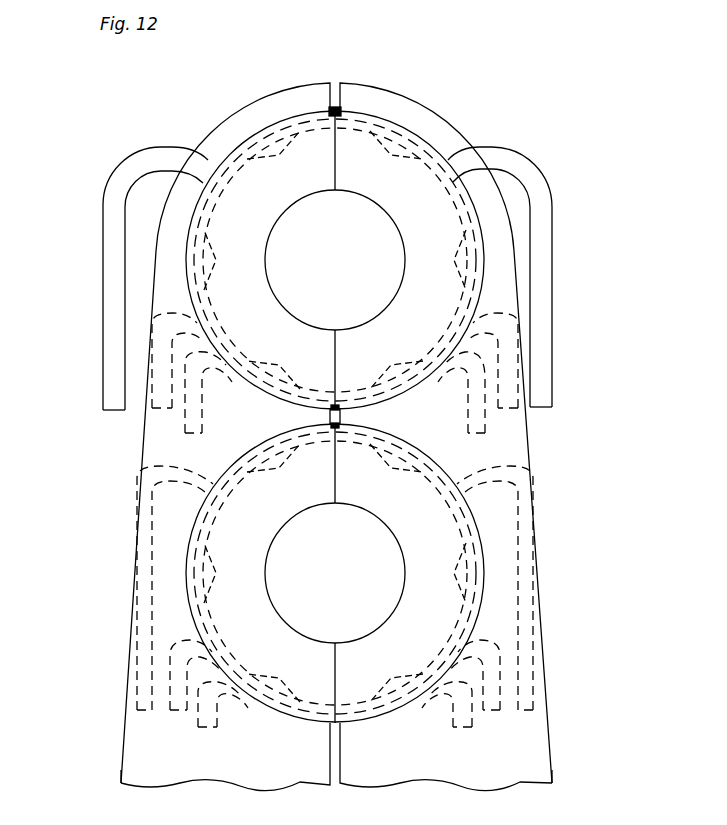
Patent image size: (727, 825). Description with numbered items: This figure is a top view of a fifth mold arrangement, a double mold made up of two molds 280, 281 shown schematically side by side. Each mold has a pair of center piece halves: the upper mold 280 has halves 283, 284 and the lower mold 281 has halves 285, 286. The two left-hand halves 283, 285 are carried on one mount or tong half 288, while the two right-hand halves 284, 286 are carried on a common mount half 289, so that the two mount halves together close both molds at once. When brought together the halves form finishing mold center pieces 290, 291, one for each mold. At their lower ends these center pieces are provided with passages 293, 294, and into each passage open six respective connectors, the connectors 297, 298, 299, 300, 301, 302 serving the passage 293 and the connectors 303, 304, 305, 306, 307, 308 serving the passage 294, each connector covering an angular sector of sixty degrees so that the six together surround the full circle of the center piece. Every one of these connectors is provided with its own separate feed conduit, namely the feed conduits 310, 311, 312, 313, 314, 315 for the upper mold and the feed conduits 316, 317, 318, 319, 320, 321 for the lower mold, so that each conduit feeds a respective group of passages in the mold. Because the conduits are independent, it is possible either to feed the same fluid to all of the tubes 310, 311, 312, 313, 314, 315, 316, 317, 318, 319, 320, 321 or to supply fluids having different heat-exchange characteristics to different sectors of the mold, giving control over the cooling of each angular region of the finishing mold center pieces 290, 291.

The mold 280 is at (98, 174).
The mold 281 is at (116, 534).
The center piece half 283 is at (291, 204).
The center piece half 284 is at (377, 201).
The center piece half 285 is at (291, 517).
The center piece half 286 is at (377, 514).
The mount or tong half 288 is at (140, 445).
The common mount half 289 is at (525, 440).
The finishing mold center piece 290 is at (180, 242).
The finishing mold center piece 291 is at (180, 577).
The passage 293 is at (192, 290).
The passage 294 is at (200, 614).
The connector 297 is at (292, 388).
The connector 298 is at (226, 260).
The connector 299 is at (292, 150).
The connector 300 is at (377, 150).
The connector 301 is at (439, 260).
The connector 302 is at (378, 388).
The connector 303 is at (292, 700).
The connector 304 is at (229, 573).
The connector 305 is at (292, 456).
The connector 306 is at (372, 456).
The connector 307 is at (439, 573).
The connector 308 is at (375, 700).
The feed conduit 310 is at (185, 419).
The feed conduit 311 is at (152, 388).
The feed conduit 312 is at (103, 359).
The feed conduit 313 is at (552, 330).
The feed conduit 314 is at (508, 357).
The feed conduit 315 is at (500, 383).
The feed conduit 316 is at (198, 727).
The feed conduit 317 is at (170, 699).
The feed conduit 318 is at (137, 674).
The feed conduit 319 is at (535, 622).
The feed conduit 320 is at (505, 646).
The feed conduit 321 is at (497, 677).